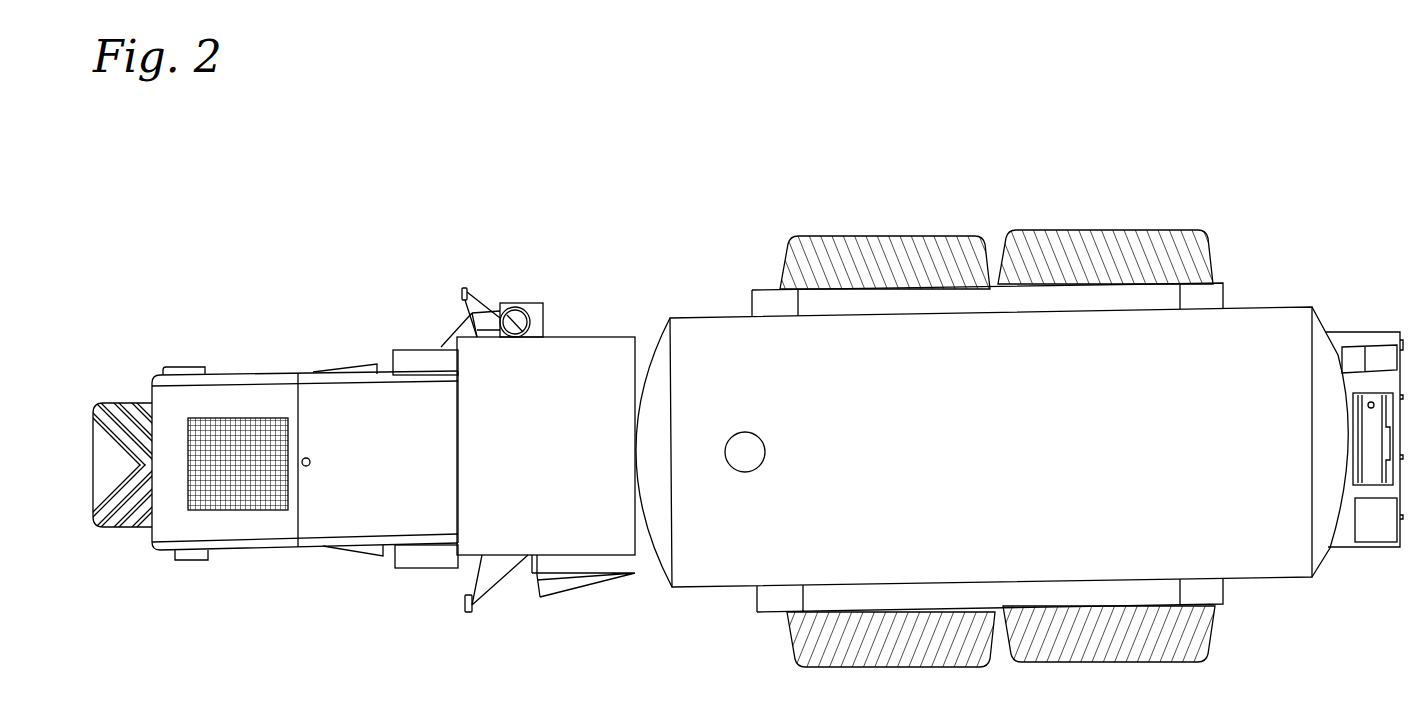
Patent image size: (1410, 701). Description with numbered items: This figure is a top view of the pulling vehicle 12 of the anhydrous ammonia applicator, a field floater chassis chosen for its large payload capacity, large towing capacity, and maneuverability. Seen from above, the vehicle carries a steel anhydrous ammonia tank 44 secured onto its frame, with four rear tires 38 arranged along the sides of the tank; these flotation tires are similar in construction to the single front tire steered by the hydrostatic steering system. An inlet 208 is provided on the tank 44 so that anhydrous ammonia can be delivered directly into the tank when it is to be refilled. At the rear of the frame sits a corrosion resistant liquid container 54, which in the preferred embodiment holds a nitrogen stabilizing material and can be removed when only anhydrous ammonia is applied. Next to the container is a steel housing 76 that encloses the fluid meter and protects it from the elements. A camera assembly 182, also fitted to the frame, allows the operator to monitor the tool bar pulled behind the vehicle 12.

The pulling vehicle 12 is at (437, 173).
The anhydrous ammonia tank 44 is at (698, 310).
The rear tires 38 is at (852, 237).
The camera assembly 182 is at (1369, 323).
The liquid container 54 is at (1363, 435).
The housing 76 is at (1373, 520).
The inlet 208 is at (735, 464).